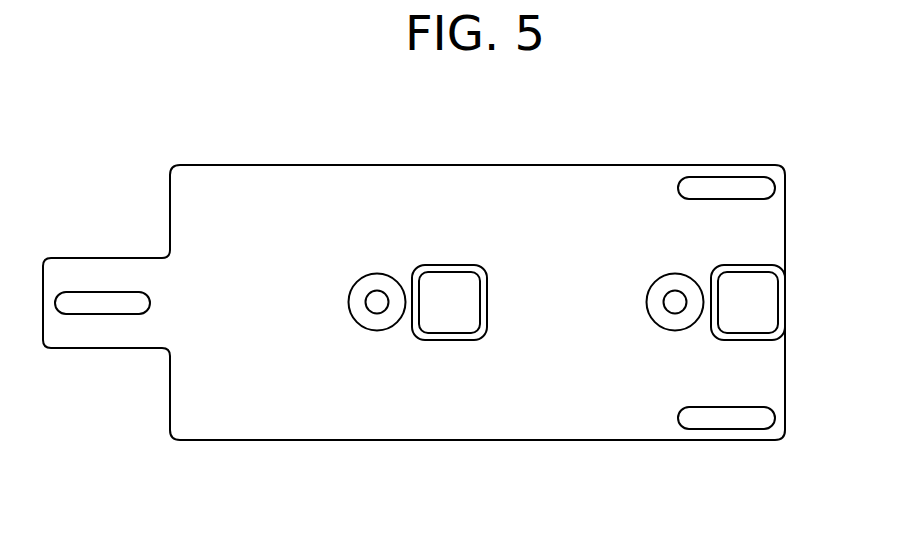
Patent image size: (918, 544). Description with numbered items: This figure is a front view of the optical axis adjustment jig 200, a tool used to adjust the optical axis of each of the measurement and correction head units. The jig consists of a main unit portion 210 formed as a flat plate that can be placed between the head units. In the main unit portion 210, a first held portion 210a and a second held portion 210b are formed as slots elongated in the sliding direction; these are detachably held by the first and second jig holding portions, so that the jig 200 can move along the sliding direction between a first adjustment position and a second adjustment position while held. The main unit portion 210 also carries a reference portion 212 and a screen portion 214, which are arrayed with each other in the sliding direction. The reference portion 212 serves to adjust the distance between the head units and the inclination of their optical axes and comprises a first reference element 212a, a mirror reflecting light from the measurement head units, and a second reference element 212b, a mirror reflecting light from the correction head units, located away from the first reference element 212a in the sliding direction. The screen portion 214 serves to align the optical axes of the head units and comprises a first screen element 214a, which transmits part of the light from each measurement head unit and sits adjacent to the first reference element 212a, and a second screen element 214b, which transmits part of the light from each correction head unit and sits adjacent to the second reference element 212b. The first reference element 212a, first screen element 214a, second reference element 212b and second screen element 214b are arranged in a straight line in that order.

The optical axis adjustment jig 200 is at (220, 153).
The main unit portion 210 is at (361, 197).
The first held portion 210a is at (100, 302).
The second held portion 210b is at (727, 187).
The reference portion 212 is at (620, 108).
The first reference element 212a is at (382, 287).
The second reference element 212b is at (672, 283).
The screen portion 214 is at (697, 491).
The first screen element 214a is at (450, 315).
The second screen element 214b is at (749, 317).